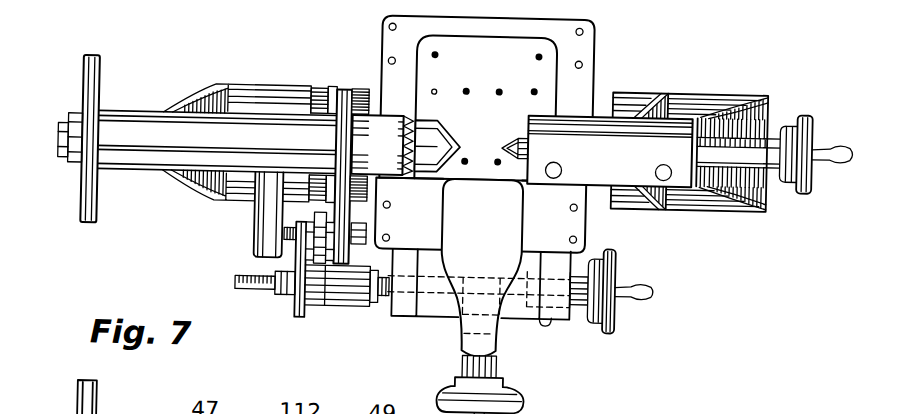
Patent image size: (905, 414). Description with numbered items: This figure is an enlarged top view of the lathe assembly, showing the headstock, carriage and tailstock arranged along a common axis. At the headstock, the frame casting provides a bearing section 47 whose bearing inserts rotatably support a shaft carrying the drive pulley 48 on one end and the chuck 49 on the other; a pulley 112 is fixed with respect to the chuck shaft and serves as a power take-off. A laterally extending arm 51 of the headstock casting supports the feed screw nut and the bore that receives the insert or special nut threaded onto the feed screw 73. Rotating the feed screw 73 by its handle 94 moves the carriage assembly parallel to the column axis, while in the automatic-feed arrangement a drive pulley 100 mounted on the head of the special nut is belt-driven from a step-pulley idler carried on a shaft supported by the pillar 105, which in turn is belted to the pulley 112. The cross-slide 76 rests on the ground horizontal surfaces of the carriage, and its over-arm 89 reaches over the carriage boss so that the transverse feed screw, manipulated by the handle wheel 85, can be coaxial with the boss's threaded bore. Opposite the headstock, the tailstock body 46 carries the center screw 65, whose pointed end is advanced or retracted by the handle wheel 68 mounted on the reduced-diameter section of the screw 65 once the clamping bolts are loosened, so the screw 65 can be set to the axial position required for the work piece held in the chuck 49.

The tailstock body 46 is at (637, 159).
The bearing section 47 is at (134, 118).
The drive pulley 48 is at (81, 211).
The chuck 49 is at (405, 145).
The laterally extending arm 51 is at (352, 310).
The center screw 65 is at (713, 162).
The handle wheel 68 is at (814, 180).
The feed screw 73 is at (252, 294).
The cross-slide 76 is at (383, 42).
The handle wheel 85 is at (524, 399).
The over-arm 89 is at (468, 232).
The handle 94 is at (620, 314).
The drive pulley 100 is at (297, 315).
The pillar 105 is at (249, 171).
The pulley 112 is at (356, 90).